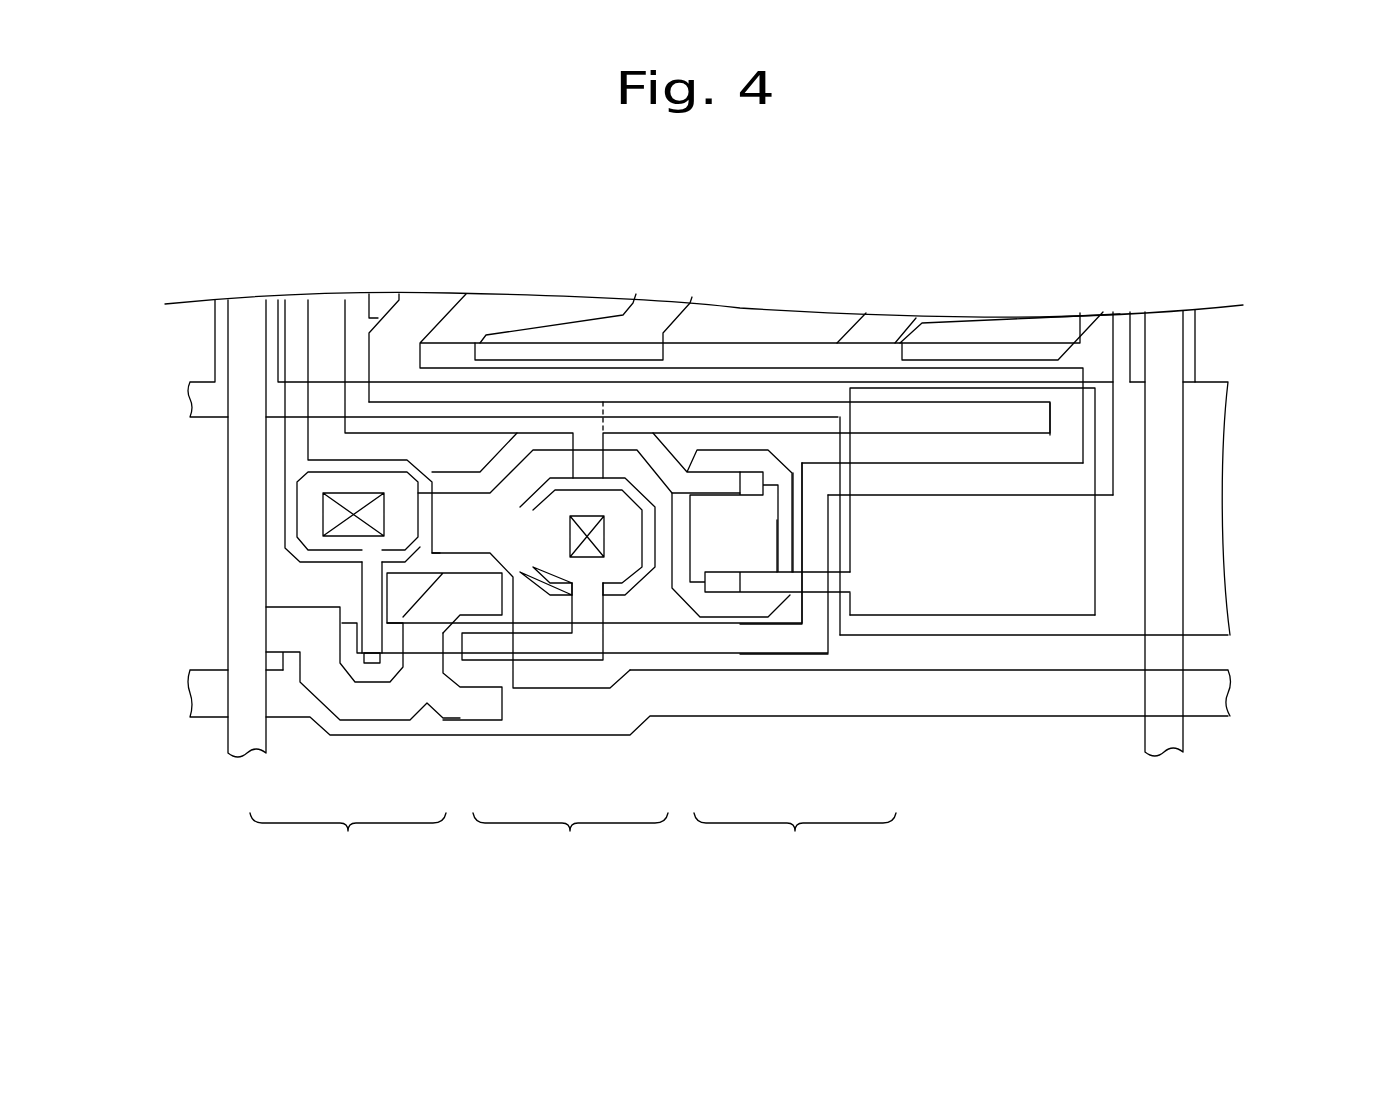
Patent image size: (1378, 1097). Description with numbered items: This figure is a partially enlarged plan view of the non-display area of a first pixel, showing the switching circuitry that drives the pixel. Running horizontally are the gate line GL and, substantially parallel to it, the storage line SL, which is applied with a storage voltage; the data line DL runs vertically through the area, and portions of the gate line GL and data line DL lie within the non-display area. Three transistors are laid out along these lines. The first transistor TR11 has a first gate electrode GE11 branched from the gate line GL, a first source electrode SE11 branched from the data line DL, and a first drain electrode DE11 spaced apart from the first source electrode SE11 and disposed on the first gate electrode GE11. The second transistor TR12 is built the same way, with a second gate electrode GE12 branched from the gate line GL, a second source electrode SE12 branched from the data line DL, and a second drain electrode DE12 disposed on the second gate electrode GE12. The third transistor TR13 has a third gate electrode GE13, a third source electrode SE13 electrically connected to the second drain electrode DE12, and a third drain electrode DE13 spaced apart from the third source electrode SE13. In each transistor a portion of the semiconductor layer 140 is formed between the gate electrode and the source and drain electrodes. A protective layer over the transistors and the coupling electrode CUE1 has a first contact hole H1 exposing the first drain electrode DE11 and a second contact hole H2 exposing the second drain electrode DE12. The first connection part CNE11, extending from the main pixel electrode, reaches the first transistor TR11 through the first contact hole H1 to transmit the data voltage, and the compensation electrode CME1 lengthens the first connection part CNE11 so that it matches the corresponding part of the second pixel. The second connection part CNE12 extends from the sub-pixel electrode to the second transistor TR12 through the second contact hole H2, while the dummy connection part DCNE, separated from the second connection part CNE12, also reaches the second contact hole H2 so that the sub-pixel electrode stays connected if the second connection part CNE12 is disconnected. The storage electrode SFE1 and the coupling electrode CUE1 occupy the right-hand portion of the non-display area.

The storage line SL is at (190, 397).
The data line DL is at (240, 585).
The gate line GL is at (190, 692).
The first connection part CNE11 is at (383, 411).
The second connection part CNE12 is at (295, 452).
The second contact hole H2 is at (325, 513).
The first contact hole H1 is at (602, 539).
The semiconductor layer 140 is at (748, 505).
The compensation electrode CME1 is at (1035, 412).
The dummy connection part DCNE is at (1105, 455).
The coupling electrode CUE1 is at (968, 598).
The storage electrode SFE1 is at (1045, 625).
The second source electrode SE12 is at (323, 690).
The second gate electrode GE12 is at (352, 728).
The second drain electrode DE12 is at (373, 663).
The first source electrode SE11 is at (468, 712).
The first gate electrode GE11 is at (498, 727).
The first drain electrode DE11 is at (560, 657).
The third source electrode SE13 is at (724, 476).
The third gate electrode GE13 is at (752, 612).
The third drain electrode DE13 is at (785, 580).
The second transistor TR12 is at (348, 836).
The first transistor TR11 is at (570, 836).
The third transistor TR13 is at (795, 836).